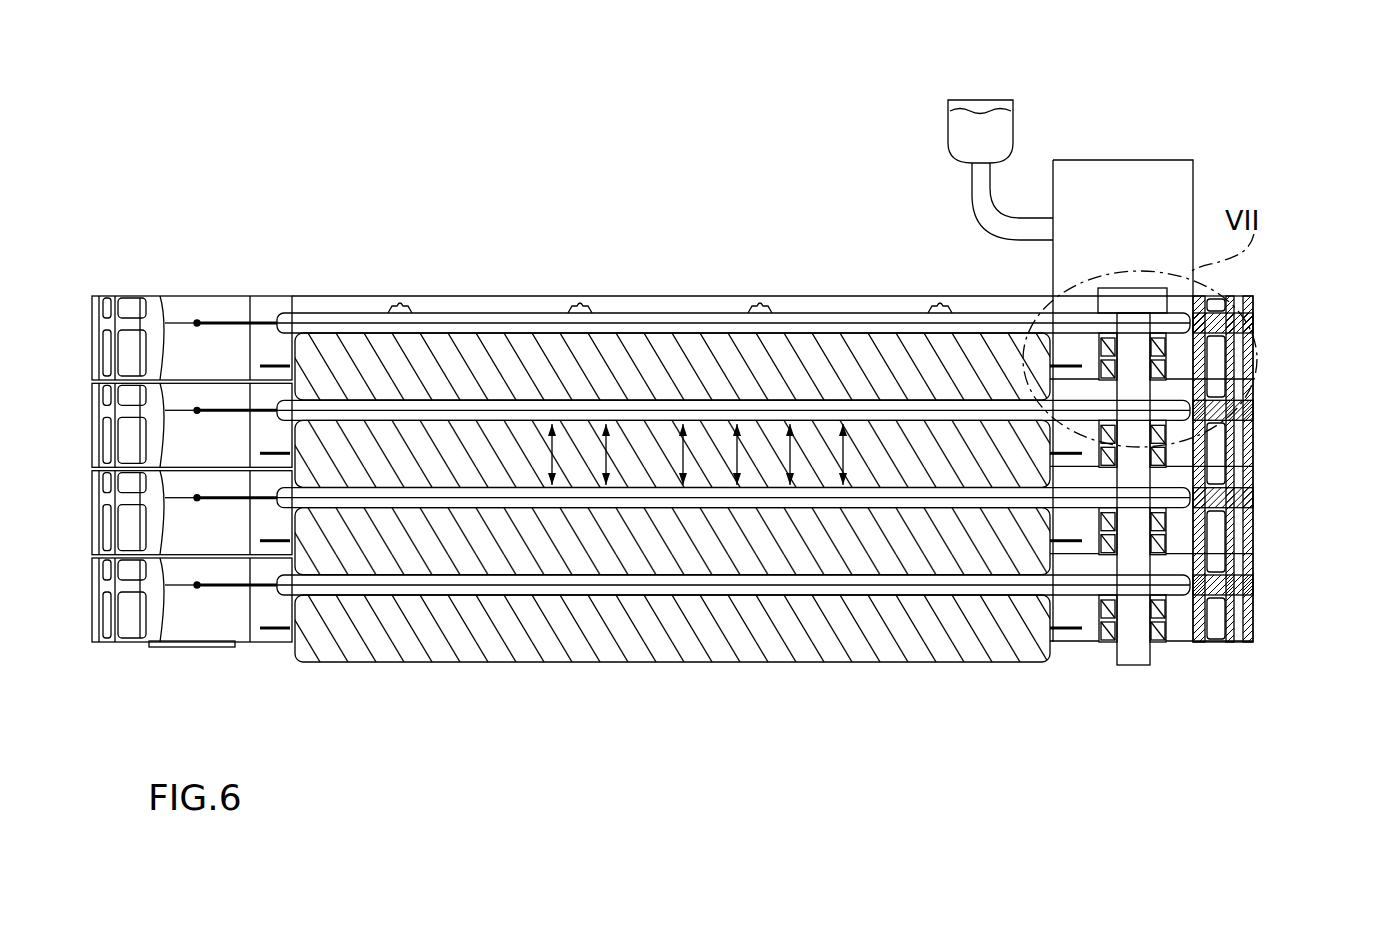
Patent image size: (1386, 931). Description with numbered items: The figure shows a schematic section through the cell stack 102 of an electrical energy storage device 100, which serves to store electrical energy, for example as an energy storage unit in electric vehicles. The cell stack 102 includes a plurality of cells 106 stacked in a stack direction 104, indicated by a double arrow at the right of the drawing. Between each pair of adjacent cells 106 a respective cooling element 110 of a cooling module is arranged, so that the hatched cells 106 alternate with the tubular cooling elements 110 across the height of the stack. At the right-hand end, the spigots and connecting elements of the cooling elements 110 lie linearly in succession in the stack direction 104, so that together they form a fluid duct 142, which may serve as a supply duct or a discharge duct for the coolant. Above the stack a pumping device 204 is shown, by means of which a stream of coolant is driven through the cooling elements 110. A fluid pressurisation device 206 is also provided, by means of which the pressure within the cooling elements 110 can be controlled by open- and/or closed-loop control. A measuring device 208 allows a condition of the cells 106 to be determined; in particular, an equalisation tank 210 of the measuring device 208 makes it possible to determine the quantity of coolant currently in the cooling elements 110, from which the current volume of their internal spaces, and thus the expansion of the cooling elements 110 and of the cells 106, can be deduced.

The electrical energy storage device 100 is at (580, 193).
The cell stack 102 is at (683, 198).
The stack direction 104 is at (1297, 417).
The cells 106 is at (645, 371).
The cooling element 110 is at (383, 333).
The fluid duct 142 is at (1137, 680).
The pumping device 204 is at (1177, 177).
The fluid pressurisation device 206 is at (1142, 187).
The measuring device 208 is at (1077, 188).
The equalisation tank 210 is at (953, 142).